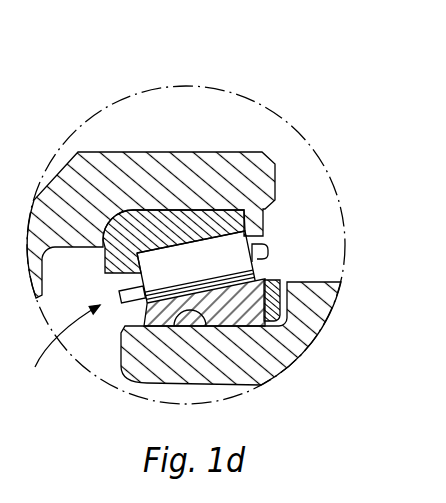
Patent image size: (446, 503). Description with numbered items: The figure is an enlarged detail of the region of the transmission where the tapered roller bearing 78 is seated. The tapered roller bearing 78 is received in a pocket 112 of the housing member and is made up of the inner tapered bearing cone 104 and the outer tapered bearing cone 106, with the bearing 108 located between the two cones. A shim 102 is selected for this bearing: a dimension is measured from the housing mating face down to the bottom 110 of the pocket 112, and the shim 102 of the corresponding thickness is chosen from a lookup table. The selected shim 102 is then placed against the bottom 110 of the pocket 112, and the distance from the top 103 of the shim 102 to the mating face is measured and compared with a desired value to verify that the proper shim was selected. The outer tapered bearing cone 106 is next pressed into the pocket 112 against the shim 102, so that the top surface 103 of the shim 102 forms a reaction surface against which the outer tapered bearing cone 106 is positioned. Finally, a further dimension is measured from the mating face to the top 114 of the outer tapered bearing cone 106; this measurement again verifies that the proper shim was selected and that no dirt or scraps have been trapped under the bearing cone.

The tapered roller bearing 78 is at (57, 347).
The shim 102 is at (275, 278).
The top surface of the shim 103 is at (240, 315).
The inner tapered bearing cone 104 is at (184, 216).
The outer tapered bearing cone 106 is at (233, 308).
The bearing 108 is at (155, 268).
The bottom of the pocket 110 is at (277, 278).
The pocket 112 is at (168, 308).
The top of the outer tapered bearing cone 114 is at (123, 317).